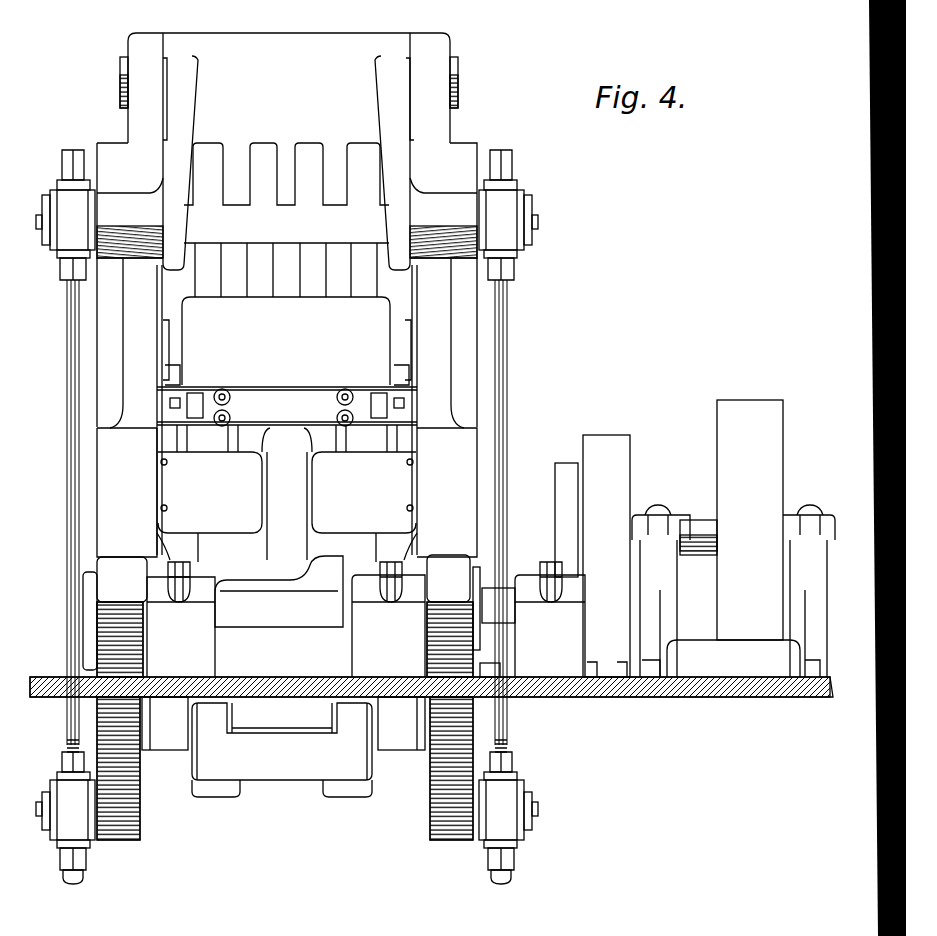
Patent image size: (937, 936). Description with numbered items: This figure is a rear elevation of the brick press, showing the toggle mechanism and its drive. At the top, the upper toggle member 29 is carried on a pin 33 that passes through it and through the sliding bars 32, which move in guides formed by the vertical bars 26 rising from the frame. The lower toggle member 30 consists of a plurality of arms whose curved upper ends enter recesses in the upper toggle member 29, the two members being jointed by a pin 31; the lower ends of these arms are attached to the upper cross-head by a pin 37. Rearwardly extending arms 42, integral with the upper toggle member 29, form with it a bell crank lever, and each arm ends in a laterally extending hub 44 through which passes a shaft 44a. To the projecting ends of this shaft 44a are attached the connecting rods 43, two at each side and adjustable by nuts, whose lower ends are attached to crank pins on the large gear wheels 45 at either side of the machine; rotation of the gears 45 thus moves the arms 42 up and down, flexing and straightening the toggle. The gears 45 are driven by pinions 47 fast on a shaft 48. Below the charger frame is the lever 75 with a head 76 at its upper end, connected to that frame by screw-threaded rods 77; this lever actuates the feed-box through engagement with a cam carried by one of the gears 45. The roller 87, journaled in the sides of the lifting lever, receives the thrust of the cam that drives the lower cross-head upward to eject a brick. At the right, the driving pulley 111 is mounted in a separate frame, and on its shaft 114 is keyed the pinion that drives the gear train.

The upper toggle member 29 is at (288, 50).
The sliding bars 32 is at (144, 42).
The pin 33 is at (120, 72).
The rearwardly extending arms 42 is at (177, 128).
The vertical bars 26 is at (127, 192).
The hub 44 is at (132, 203).
The shaft 44a is at (200, 227).
The pin 31 is at (305, 160).
The lower toggle member 30 is at (312, 254).
The pin 37 is at (162, 339).
The head 76 is at (285, 405).
The screw-threaded rods 77 is at (233, 402).
The lever 75 is at (280, 482).
The shaft 48 is at (92, 603).
The pinions 47 is at (123, 632).
The large gear wheels 45 is at (115, 822).
The roller 87 is at (305, 715).
The connecting rods 43 is at (75, 385).
The driving pulley 111 is at (758, 412).
The shaft 114 is at (698, 528).